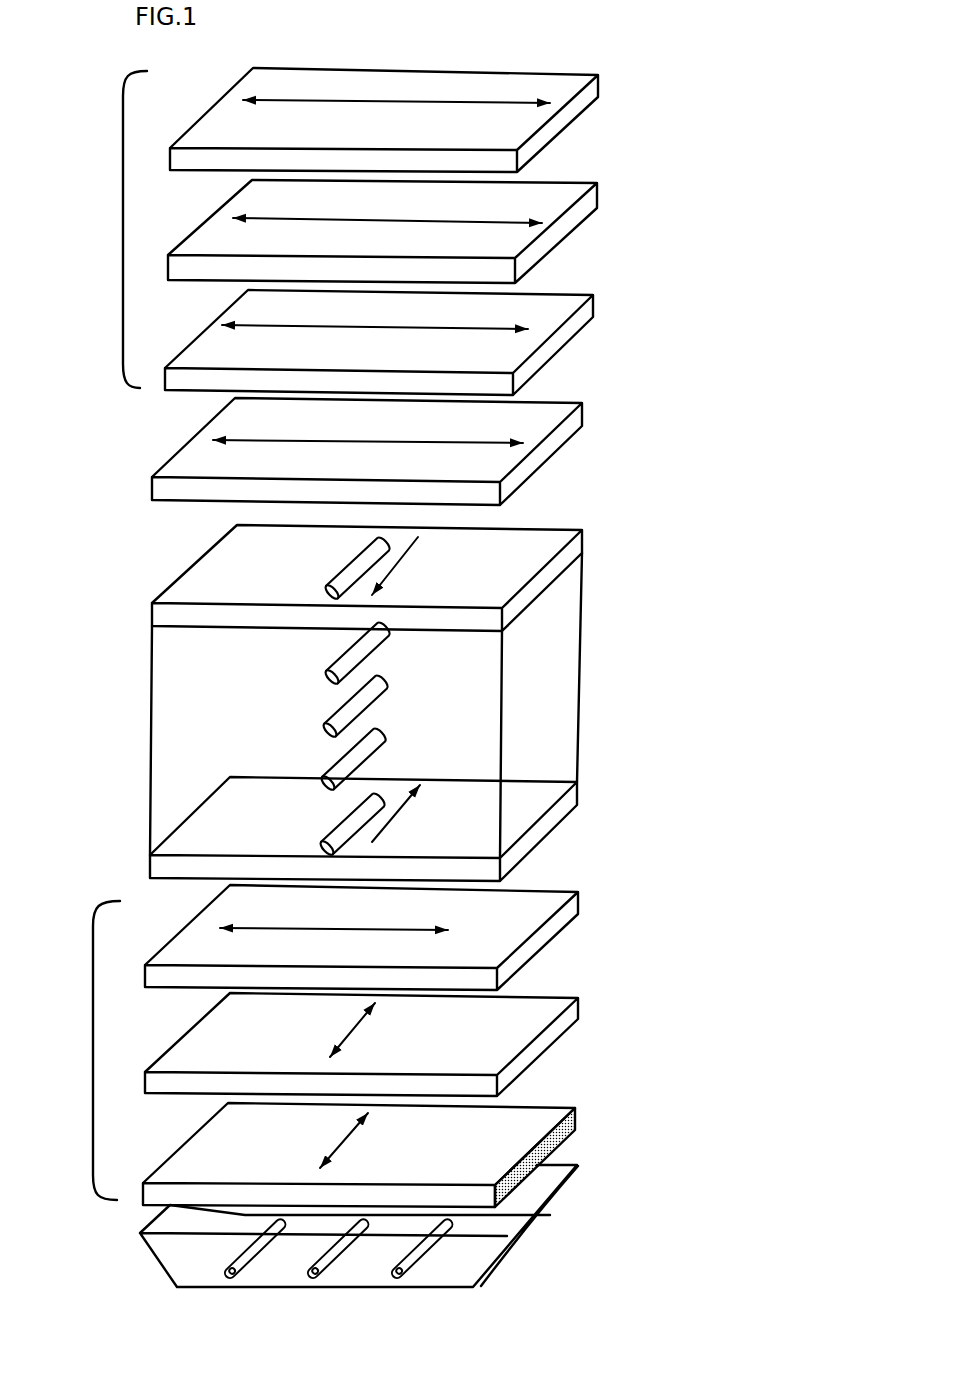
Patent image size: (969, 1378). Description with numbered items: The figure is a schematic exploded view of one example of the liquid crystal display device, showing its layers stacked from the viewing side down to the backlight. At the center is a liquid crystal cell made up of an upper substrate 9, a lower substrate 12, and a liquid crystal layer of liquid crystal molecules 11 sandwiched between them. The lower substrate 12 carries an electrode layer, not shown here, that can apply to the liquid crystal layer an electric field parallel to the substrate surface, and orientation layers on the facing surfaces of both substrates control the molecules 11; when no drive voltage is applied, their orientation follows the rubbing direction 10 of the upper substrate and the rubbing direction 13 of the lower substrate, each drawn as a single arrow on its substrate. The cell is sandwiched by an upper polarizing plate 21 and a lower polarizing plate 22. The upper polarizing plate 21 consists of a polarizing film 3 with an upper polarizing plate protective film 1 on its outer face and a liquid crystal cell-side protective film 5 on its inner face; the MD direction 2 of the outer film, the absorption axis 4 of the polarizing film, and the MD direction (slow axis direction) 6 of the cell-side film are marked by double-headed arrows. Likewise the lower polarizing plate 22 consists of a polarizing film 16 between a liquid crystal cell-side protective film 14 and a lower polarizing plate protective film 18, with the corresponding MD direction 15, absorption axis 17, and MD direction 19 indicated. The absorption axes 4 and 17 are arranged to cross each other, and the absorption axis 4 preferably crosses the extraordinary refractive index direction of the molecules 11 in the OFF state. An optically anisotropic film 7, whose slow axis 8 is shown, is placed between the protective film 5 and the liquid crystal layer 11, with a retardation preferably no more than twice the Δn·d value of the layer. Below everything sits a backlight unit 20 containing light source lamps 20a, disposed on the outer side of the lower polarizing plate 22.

The upper polarizing plate protective film 1 is at (612, 78).
The MD direction of upper polarizing plate protective film 2 is at (453, 108).
The polarizing film of upper polarizing plate 3 is at (615, 182).
The absorption axis of polarizing film of upper polarizing plate 4 is at (387, 223).
The liquid crystal cell-side protective film of upper polarizing plate 5 is at (603, 293).
The MD direction (slow axis direction) of liquid crystal cell-side protective film o 6 is at (393, 342).
The optically anisotropic film 7 is at (605, 398).
The slow axis of optically anisotropic film 8 is at (395, 453).
The upper substrate of liquid crystal cell 9 is at (587, 535).
The rubbing direction for liquid crystal orientation of upper substrate 10 is at (412, 565).
The liquid crystal molecule (liquid crystal layer) 11 is at (420, 677).
The lower substrate of liquid crystal cell 12 is at (573, 800).
The rubbing direction for liquid crystal orientation of lower substrate 13 is at (393, 813).
The liquid crystal cell-side protective film of lower polarizing plate 14 is at (582, 898).
The MD direction (slow axis direction) of liquid crystal cell-side protective film o 15 is at (467, 932).
The polarizing film of lower polarizing plate 16 is at (580, 998).
The absorption axis of polarizing film of lower polarizing plate 17 is at (370, 1032).
The lower polarizing plate protective film 18 is at (575, 1115).
The MD direction of lower polarizing plate protective film 19 is at (357, 1143).
The backlight unit 20 is at (545, 1205).
The light source lamp 20a is at (425, 1257).
The upper polarizing plate 21 is at (110, 229).
The lower polarizing plate 22 is at (75, 1050).